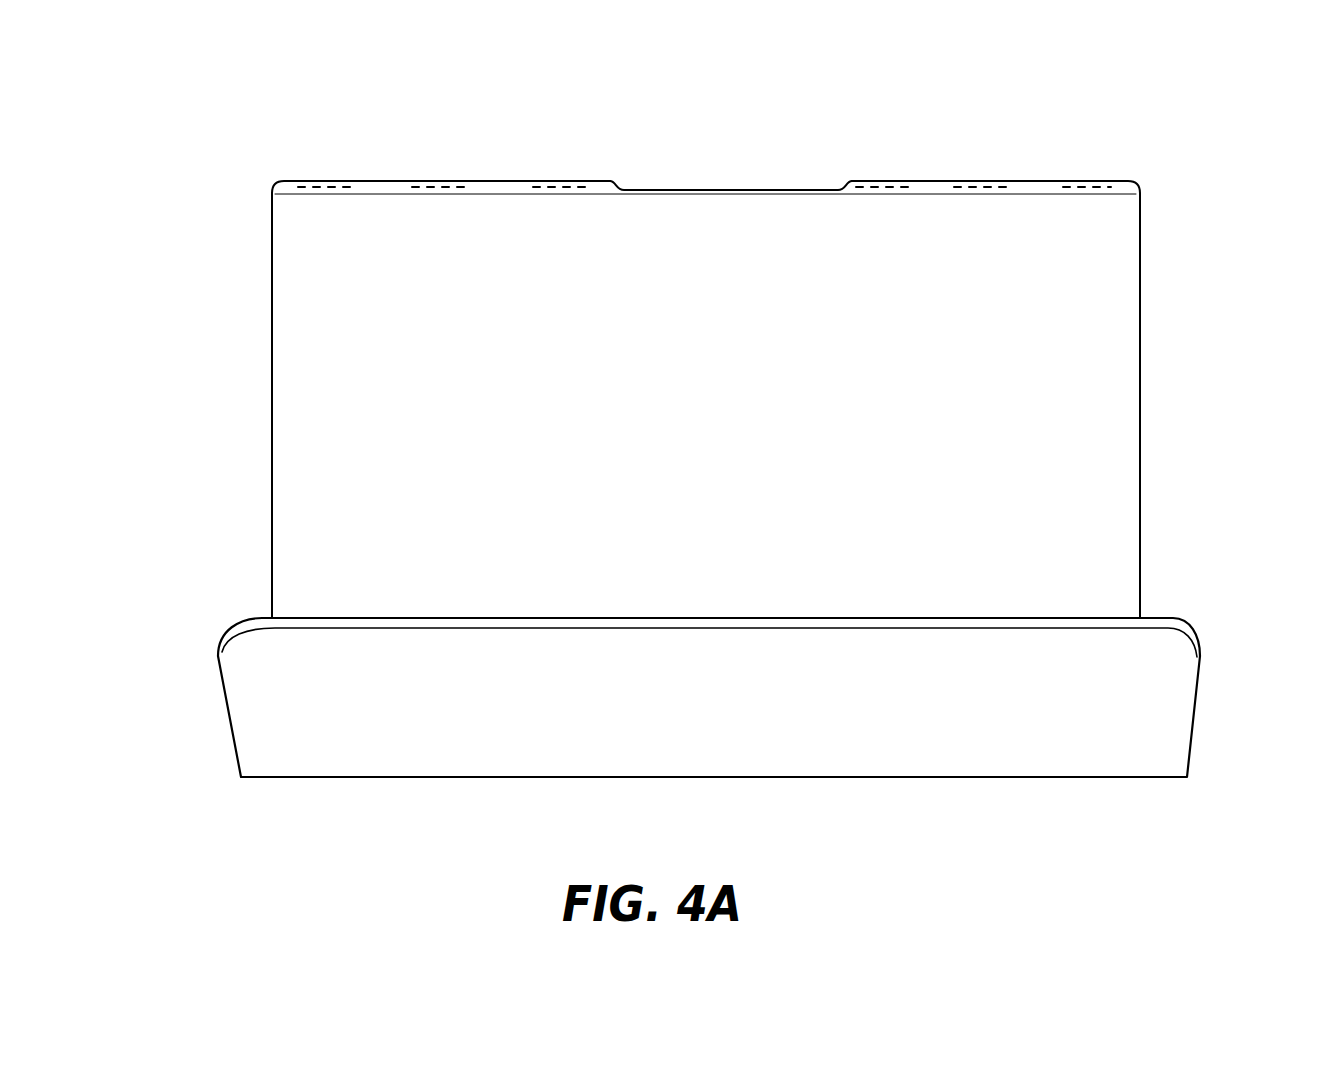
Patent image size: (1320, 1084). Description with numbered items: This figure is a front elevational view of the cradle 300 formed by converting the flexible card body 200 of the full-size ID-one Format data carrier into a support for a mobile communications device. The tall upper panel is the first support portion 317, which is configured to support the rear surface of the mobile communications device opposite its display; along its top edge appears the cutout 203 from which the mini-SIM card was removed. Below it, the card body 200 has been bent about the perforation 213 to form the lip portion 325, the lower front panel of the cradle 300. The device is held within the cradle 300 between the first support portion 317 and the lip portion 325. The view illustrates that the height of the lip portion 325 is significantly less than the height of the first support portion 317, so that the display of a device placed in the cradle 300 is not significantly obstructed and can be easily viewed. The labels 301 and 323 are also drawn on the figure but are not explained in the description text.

The card body 200 is at (228, 135).
The cutout 203 is at (615, 182).
The display housing 301 is at (1110, 181).
The display 323 is at (763, 248).
The first support portion 317 is at (1122, 374).
The cradle 300 is at (1214, 571).
The lip portion 325 is at (477, 745).
The perforation 213 is at (242, 778).